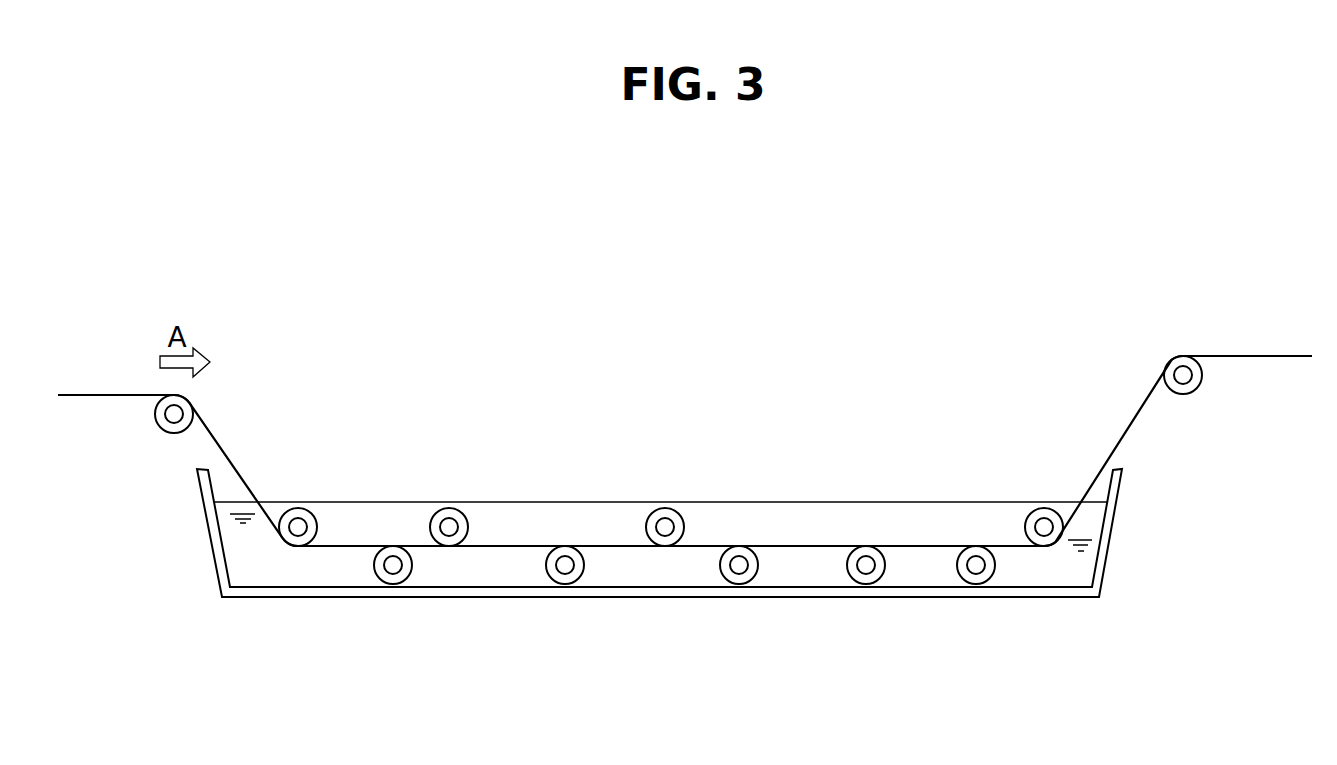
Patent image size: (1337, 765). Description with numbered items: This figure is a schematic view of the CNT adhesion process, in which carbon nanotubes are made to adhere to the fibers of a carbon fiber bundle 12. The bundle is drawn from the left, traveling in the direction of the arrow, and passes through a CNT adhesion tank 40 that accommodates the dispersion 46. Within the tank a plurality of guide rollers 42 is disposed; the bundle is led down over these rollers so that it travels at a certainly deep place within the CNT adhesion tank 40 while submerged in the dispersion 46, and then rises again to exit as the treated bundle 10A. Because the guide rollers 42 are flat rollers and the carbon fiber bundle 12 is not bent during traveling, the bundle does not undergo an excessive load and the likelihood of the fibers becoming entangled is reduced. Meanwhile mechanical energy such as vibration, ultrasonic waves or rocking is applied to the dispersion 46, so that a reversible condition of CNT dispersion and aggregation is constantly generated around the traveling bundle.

The treated web / film 10A is at (1238, 355).
The carbon fiber bundle 12 is at (99, 393).
The CNT adhesion tank 40 is at (647, 598).
The guide rollers 42 is at (167, 427).
The dispersion 46 is at (243, 555).